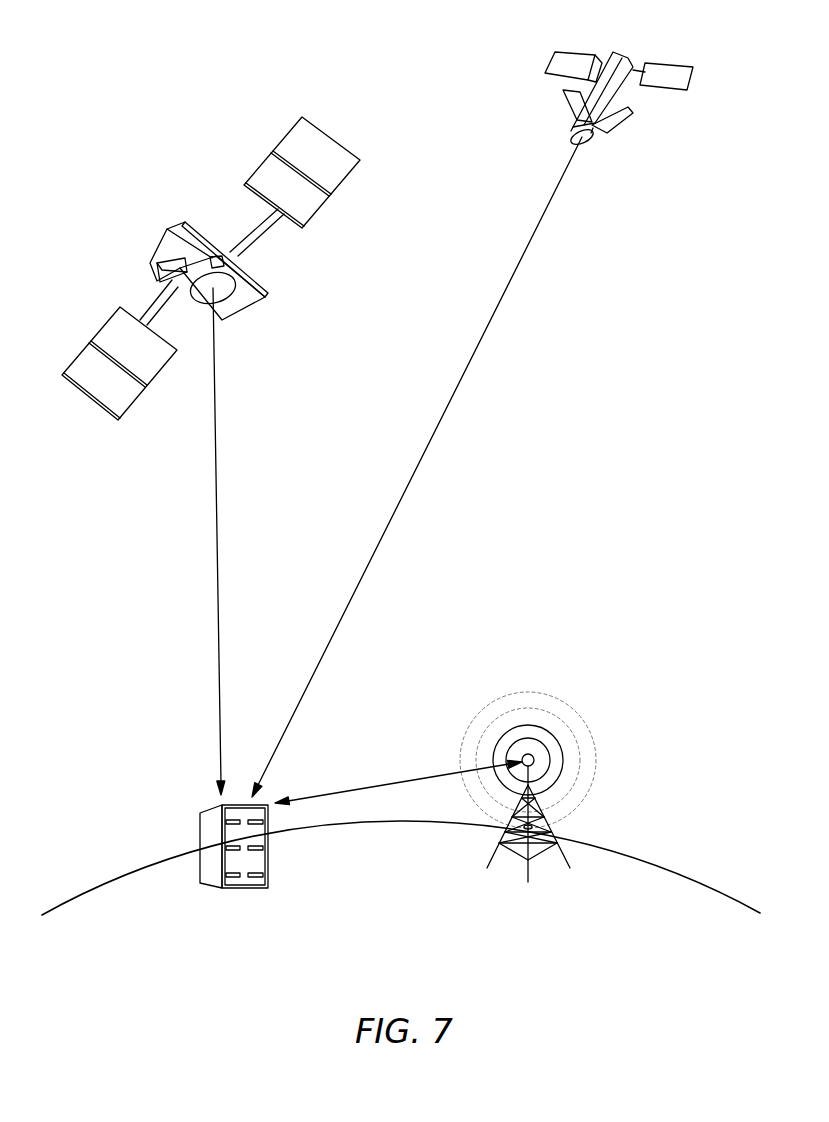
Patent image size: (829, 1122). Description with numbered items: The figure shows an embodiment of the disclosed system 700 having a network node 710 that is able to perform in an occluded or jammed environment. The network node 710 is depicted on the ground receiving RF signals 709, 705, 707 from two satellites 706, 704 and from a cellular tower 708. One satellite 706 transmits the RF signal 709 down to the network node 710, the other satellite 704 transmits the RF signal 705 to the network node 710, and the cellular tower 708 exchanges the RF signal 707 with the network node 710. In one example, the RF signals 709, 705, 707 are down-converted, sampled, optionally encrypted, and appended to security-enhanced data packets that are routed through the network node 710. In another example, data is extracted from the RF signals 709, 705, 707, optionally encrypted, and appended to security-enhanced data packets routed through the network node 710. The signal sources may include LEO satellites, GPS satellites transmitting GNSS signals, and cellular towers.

The system 700 is at (163, 89).
The satellite 704 is at (615, 127).
The RF signal 705 is at (455, 388).
The satellite 706 is at (170, 238).
The RF signal 707 is at (403, 782).
The cellular tower 708 is at (553, 827).
The RF signal 709 is at (218, 607).
The network node 710 is at (210, 832).